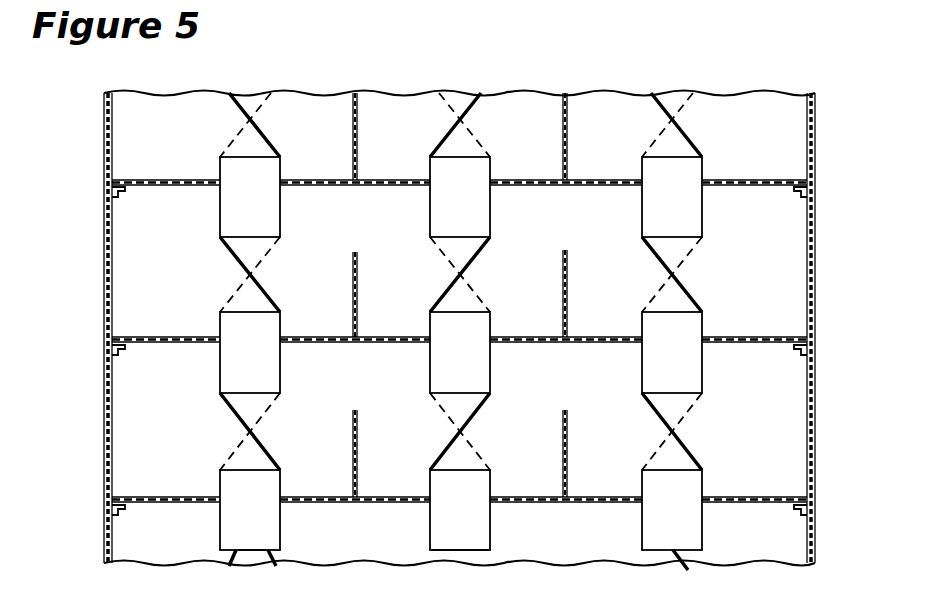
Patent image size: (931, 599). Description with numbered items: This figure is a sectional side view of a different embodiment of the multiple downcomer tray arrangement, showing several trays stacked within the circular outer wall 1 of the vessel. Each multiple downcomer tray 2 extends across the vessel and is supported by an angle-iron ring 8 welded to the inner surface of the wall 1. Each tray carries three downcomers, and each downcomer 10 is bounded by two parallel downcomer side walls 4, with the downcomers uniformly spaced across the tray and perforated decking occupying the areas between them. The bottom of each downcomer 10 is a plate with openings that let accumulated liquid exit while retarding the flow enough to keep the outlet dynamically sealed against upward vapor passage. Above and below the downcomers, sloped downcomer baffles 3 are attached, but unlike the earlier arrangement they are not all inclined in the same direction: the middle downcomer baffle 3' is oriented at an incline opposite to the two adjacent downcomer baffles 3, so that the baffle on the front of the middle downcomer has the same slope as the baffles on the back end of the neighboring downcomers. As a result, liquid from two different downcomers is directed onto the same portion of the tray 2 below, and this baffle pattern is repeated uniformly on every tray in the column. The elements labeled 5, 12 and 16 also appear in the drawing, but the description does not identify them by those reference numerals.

The outer wall 1 is at (815, 259).
The multiple downcomer tray 2 is at (372, 179).
The downcomer baffle 3 is at (455, 281).
The middle downcomer baffle 3' is at (442, 431).
The downcomer side wall 4 is at (490, 216).
The inclined guide plate 5 is at (222, 155).
The angle-iron ring 8 is at (800, 193).
The downcomer 10 is at (262, 551).
The outlet plate 12 is at (233, 553).
The vertical baffle 16 is at (348, 133).